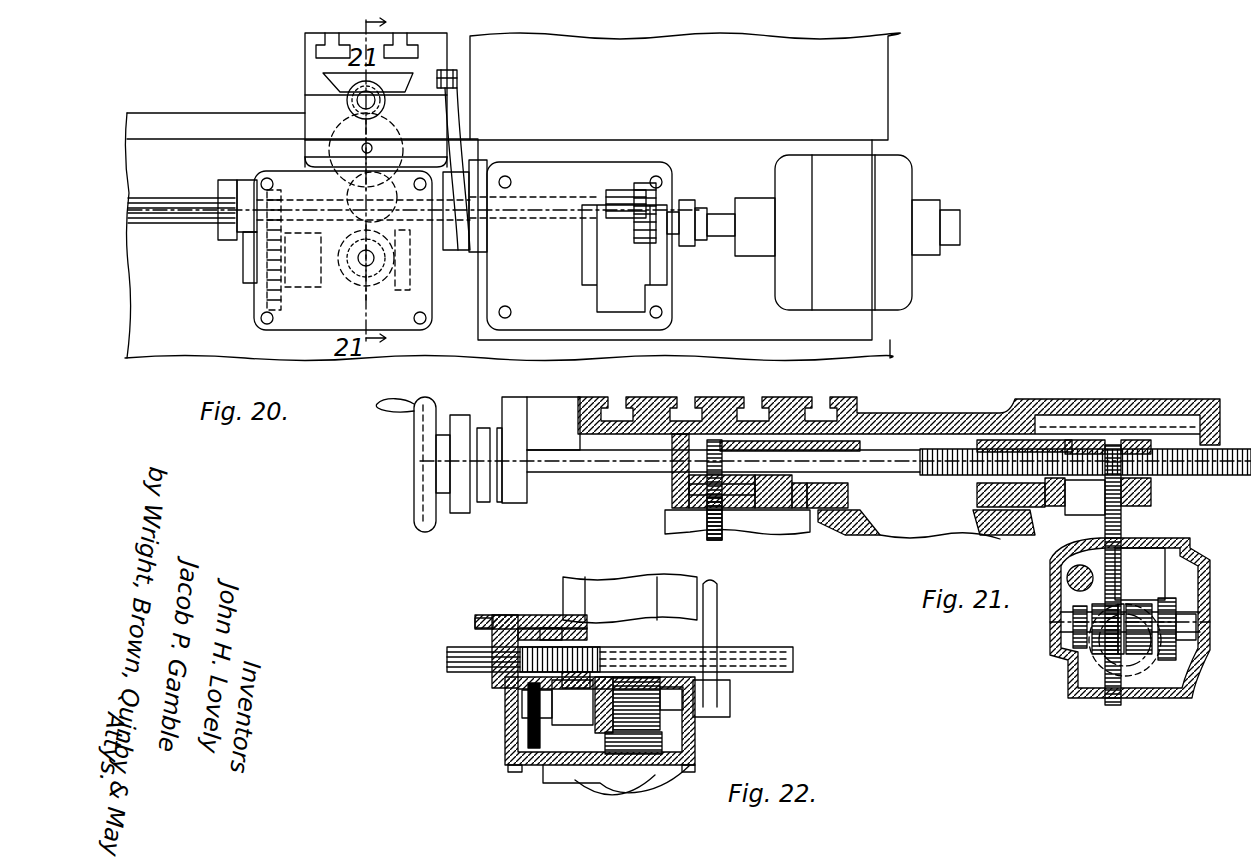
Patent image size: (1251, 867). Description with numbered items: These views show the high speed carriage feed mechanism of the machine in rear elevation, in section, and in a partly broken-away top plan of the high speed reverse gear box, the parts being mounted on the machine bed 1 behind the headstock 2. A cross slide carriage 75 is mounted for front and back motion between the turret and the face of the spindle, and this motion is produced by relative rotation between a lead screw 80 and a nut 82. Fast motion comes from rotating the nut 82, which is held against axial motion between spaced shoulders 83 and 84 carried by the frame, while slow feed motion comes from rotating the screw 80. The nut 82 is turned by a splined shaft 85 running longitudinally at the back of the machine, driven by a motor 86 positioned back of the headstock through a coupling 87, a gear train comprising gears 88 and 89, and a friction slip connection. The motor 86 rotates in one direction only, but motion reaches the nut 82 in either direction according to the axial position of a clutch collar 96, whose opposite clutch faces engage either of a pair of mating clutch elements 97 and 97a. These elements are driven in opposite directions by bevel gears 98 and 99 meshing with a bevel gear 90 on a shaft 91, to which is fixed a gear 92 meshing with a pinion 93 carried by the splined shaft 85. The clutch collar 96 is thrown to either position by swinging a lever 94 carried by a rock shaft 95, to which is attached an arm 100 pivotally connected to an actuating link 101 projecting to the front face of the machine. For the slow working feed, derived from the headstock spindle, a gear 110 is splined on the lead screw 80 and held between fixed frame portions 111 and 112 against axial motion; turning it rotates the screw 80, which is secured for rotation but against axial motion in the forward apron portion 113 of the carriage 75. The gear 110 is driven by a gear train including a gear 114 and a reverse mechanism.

In FIG. 20, the lathe bed 1 is at (128, 320).
In FIG. 21, the lathe bed 1 is at (860, 540).
In FIG. 20, the headstock 2 is at (880, 72).
In FIG. 20, the cross slide carriage 75 is at (310, 72).
In FIG. 21, the cross slide carriage 75 is at (634, 536).
In FIG. 22, the cross slide carriage 75 is at (622, 584).
In FIG. 20, the lead screw 80 is at (388, 100).
In FIG. 21, the lead screw 80 is at (942, 450).
In FIG. 20, the nut 82 is at (350, 100).
In FIG. 21, the nut 82 is at (1124, 440).
In FIG. 21, the shoulder 83 is at (1084, 440).
In FIG. 21, the shoulder 84 is at (1152, 446).
In FIG. 20, the splined shaft 85 is at (182, 193).
In FIG. 21, the splined shaft 85 is at (1068, 582).
In FIG. 22, the splined shaft 85 is at (468, 672).
In FIG. 20, the motor 86 is at (900, 166).
In FIG. 20, the coupling 87 is at (692, 208).
In FIG. 20, the gear 88 is at (634, 244).
In FIG. 20, the gear 89 is at (632, 184).
In FIG. 20, the bevel gear 90 is at (352, 290).
In FIG. 21, the bevel gear 90 is at (1128, 690).
In FIG. 22, the bevel gear 90 is at (608, 708).
In FIG. 20, the shaft 91 is at (246, 260).
In FIG. 20, the gear 92 is at (266, 294).
In FIG. 22, the gear 92 is at (528, 738).
In FIG. 20, the pinion 93 is at (268, 192).
In FIG. 22, the pinion 93 is at (542, 640).
In FIG. 20, the lever 94 is at (412, 262).
In FIG. 21, the lever 94 is at (1142, 574).
In FIG. 22, the lever 94 is at (700, 710).
In FIG. 20, the rock shaft 95 is at (478, 180).
In FIG. 21, the rock shaft 95 is at (1150, 548).
In FIG. 21, the clutch collar 96 is at (1104, 700).
In FIG. 21, the clutch element 97 is at (1080, 664).
In FIG. 21, the clutch element 97a is at (1157, 646).
In FIG. 22, the clutch element 97a is at (620, 726).
In FIG. 21, the bevel gear 98 is at (1070, 646).
In FIG. 20, the bevel gear 99 is at (386, 278).
In FIG. 21, the bevel gear 99 is at (1198, 642).
In FIG. 22, the bevel gear 99 is at (664, 748).
In FIG. 20, the arm 100 is at (465, 136).
In FIG. 20, the actuating link 101 is at (452, 60).
In FIG. 22, the actuating link 101 is at (720, 614).
In FIG. 21, the gear 110 is at (713, 440).
In FIG. 21, the fixed frame portion 111 is at (672, 482).
In FIG. 21, the fixed frame portion 112 is at (868, 440).
In FIG. 21, the forward apron portion 113 is at (527, 496).
In FIG. 21, the gear 114 is at (722, 538).